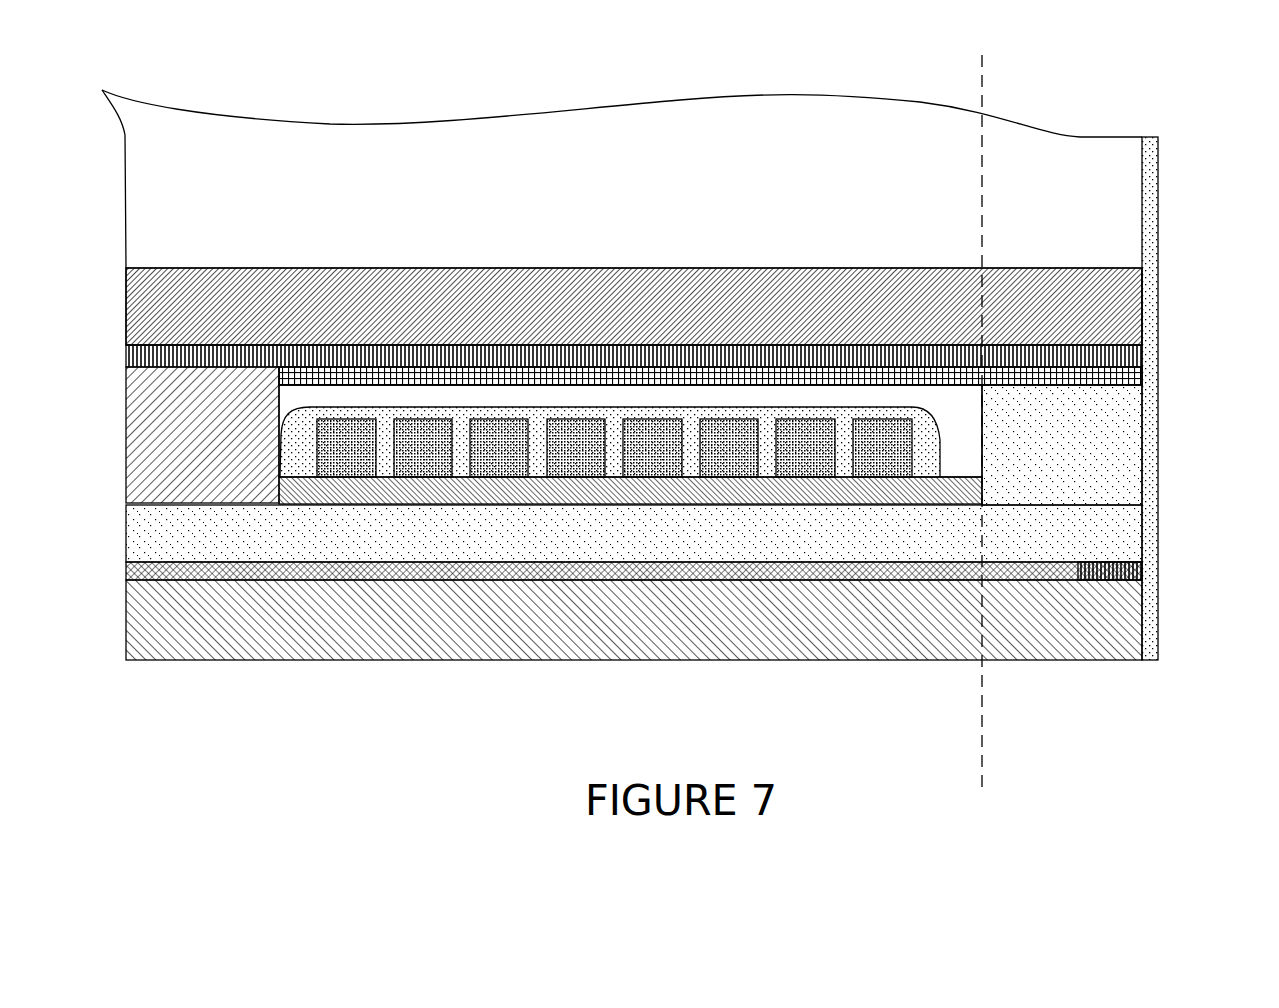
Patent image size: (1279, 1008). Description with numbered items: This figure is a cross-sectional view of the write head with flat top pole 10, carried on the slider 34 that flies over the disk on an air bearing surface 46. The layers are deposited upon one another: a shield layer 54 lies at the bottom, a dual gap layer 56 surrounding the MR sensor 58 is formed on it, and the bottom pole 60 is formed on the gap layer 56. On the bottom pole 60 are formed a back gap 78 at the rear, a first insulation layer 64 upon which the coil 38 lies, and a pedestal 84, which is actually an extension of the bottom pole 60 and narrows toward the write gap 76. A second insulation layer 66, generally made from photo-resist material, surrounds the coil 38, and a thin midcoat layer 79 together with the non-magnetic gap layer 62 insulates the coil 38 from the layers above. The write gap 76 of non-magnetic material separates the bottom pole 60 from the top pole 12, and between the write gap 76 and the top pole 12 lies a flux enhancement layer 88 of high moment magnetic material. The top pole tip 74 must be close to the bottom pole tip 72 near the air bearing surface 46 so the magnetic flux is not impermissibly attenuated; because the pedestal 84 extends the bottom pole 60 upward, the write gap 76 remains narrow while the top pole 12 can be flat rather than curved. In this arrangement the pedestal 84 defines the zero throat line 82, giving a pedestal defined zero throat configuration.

The write head with flat top pole 10 is at (373, 105).
The top pole 12 is at (860, 290).
The slider 34 is at (844, 154).
The coil 38 is at (565, 435).
The air bearing surface 46 is at (1158, 528).
The shield layer 54 is at (1010, 628).
The dual gap layer 56 is at (788, 572).
The MR sensor 58 is at (1110, 571).
The bottom pole 60 is at (669, 530).
The non-magnetic gap layer 62 is at (405, 373).
The first insulation layer 64 is at (542, 490).
The second insulation layer 66 is at (695, 425).
The bottom pole tip 72 is at (1142, 397).
The top pole tip 74 is at (1142, 333).
The write gap 76 is at (1142, 375).
The back gap 78 is at (178, 428).
The midcoat layer 79 is at (366, 396).
The zero throat line 82 is at (982, 168).
The pedestal 84 is at (1108, 428).
The flux enhancement layer 88 is at (1142, 357).